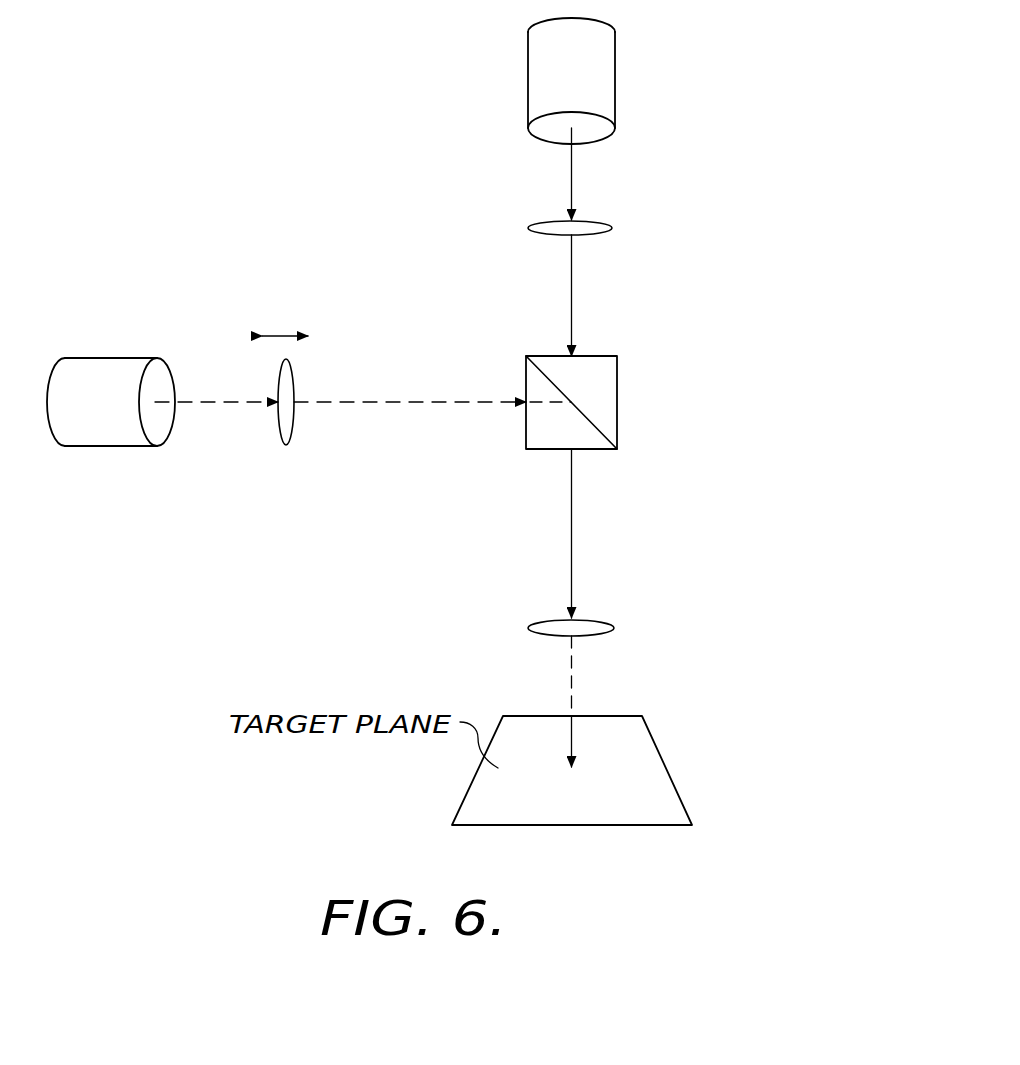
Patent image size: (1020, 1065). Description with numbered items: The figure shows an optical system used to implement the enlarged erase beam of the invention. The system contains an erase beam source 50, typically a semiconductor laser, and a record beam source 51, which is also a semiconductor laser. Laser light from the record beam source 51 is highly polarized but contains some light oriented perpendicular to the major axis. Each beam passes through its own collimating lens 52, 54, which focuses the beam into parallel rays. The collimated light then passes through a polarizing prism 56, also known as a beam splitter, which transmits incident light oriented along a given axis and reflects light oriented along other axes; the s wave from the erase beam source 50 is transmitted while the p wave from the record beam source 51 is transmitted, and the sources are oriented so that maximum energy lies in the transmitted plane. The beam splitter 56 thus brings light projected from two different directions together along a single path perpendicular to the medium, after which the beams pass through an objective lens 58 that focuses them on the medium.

The erase beam source 50 is at (105, 446).
The record beam source 51 is at (615, 93).
The collimating lens 52 is at (286, 446).
The collimating lens 54 is at (612, 228).
The polarizing prism 56 is at (617, 380).
The objective lens 58 is at (614, 628).